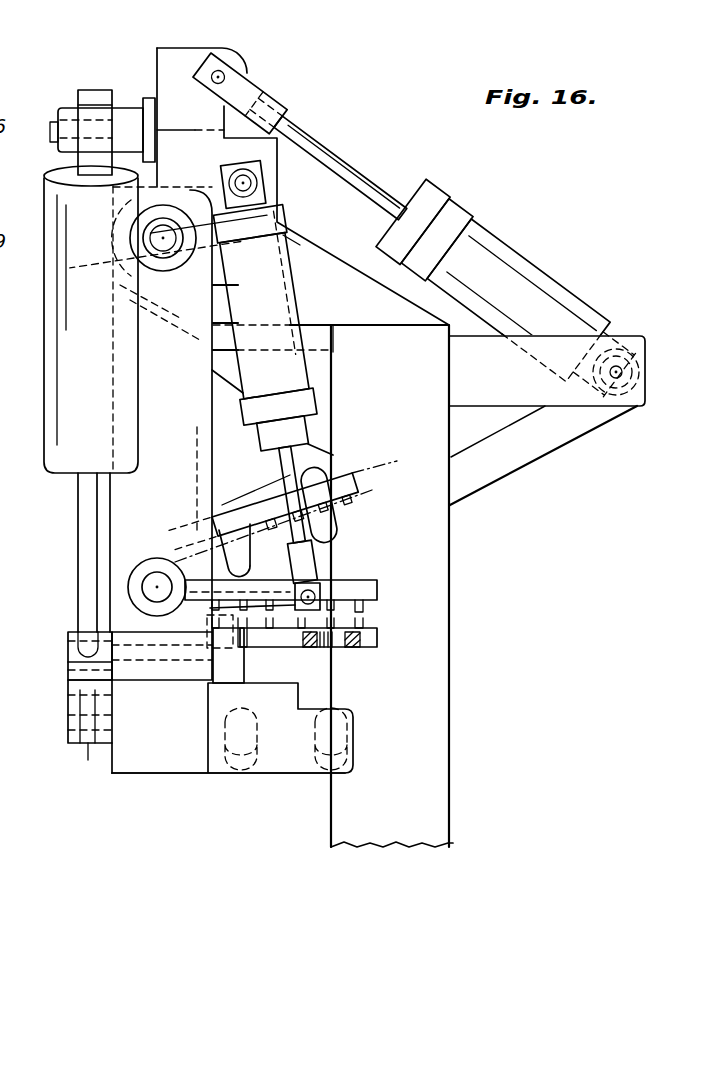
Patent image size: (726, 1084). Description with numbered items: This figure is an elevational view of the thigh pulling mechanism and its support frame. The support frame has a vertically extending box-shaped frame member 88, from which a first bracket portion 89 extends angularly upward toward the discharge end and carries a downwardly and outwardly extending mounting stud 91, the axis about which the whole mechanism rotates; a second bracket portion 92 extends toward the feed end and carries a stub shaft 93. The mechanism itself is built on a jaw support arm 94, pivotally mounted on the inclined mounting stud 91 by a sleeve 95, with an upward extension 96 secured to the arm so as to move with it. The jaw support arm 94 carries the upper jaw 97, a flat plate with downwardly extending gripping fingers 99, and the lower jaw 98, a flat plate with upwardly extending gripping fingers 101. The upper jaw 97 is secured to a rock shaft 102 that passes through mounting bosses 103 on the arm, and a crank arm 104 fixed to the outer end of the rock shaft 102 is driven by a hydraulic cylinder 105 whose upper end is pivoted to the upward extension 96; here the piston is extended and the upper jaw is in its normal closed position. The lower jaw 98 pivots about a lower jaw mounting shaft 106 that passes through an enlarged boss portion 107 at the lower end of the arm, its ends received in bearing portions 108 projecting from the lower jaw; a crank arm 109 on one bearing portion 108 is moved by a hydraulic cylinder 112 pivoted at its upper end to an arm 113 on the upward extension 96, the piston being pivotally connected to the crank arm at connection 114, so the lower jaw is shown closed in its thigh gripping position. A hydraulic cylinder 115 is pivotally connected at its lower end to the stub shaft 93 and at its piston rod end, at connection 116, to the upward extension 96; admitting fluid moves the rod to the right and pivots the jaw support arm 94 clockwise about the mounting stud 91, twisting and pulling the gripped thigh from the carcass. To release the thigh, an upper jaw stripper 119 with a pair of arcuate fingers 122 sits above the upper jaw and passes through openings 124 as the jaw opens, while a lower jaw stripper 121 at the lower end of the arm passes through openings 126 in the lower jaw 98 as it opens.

The frame member 88 is at (447, 728).
The first bracket portion 89 is at (310, 250).
The mounting stud 91 is at (168, 252).
The second bracket portion 92 is at (623, 336).
The stub shaft 93 is at (647, 378).
The jaw support arm 94 is at (173, 481).
The sleeve 95 is at (160, 207).
The upward extension 96 is at (258, 66).
The upper jaw 97 is at (488, 590).
The lower jaw 98 is at (370, 640).
The gripping fingers 99 is at (378, 592).
The gripping fingers 101 is at (365, 624).
The rock shaft 102 is at (147, 590).
The mounting bosses 103 is at (148, 558).
The crank arm 104 is at (290, 612).
The hydraulic cylinder 105 is at (298, 307).
The lower jaw mounting shaft 106 is at (244, 668).
The enlarged boss portion 107 is at (163, 673).
The bearing portions 108 is at (228, 686).
The crank arm 109 is at (90, 744).
The hydraulic cylinder 112 is at (122, 376).
The arm 113 is at (147, 98).
The pivotal connection 114 is at (83, 707).
The hydraulic cylinder 115 is at (502, 242).
The pivotal connection 116 is at (226, 90).
The upper jaw stripper 119 is at (242, 488).
The lower jaw stripper 121 is at (252, 789).
The arcuate fingers 122 is at (325, 548).
The openings 124 is at (330, 570).
The openings 126 is at (353, 748).